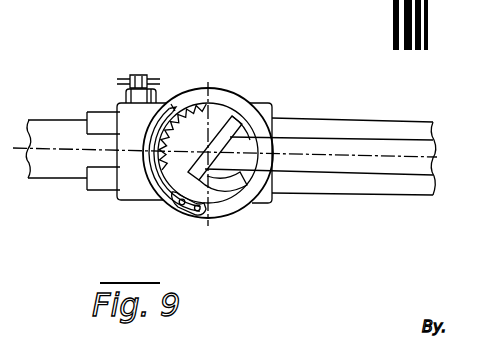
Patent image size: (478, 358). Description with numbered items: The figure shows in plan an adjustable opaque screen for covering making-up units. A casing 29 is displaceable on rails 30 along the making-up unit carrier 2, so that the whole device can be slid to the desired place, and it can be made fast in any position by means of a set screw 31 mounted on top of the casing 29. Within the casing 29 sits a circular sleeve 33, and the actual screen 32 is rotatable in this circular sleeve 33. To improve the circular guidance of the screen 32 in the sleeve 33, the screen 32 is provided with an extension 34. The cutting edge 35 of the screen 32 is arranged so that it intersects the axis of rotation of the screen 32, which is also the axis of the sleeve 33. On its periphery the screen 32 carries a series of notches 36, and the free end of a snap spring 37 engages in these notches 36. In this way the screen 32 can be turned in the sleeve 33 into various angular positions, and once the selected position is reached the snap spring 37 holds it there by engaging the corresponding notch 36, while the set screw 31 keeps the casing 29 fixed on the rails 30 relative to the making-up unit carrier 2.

The making-up unit carrier 2 is at (393, 124).
The casing 29 is at (118, 197).
The rails 30 is at (327, 118).
The set screw 31 is at (140, 74).
The screen 32 is at (186, 210).
The circular sleeve 33 is at (252, 182).
The extension 34 is at (218, 186).
The cutting edge 35 is at (224, 134).
The notches 36 is at (188, 106).
The snap spring 37 is at (158, 185).